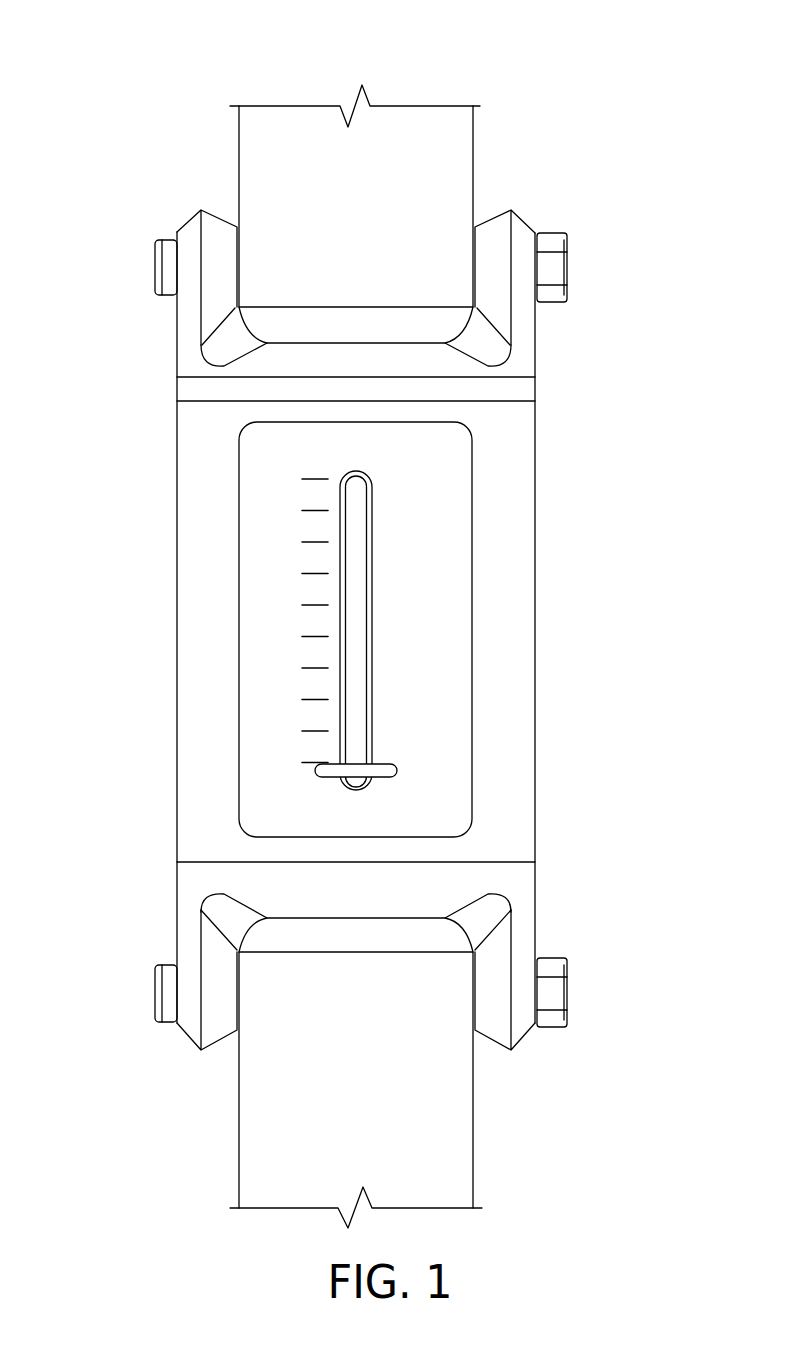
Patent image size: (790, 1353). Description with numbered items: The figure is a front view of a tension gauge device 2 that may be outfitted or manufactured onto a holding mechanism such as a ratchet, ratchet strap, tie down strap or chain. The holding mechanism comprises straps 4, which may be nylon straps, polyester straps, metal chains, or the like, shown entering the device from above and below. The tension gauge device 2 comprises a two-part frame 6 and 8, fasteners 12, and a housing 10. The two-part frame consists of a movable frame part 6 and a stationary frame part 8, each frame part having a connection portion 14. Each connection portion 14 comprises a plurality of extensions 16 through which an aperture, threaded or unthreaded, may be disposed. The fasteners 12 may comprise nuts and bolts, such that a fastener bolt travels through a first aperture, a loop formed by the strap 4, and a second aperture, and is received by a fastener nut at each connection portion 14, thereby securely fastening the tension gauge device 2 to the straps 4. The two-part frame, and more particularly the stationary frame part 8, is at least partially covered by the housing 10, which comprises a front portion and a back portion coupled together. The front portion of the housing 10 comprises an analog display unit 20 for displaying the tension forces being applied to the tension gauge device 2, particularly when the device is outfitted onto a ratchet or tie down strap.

The tension gauge device 2 is at (513, 52).
The straps 4 is at (457, 138).
The movable frame part 6 is at (497, 353).
The stationary frame part 8 is at (500, 905).
The housing 10 is at (502, 778).
The fasteners 12 is at (557, 270).
The connection portion 14 is at (187, 198).
The extensions 16 is at (187, 313).
The analog display unit 20 is at (443, 503).